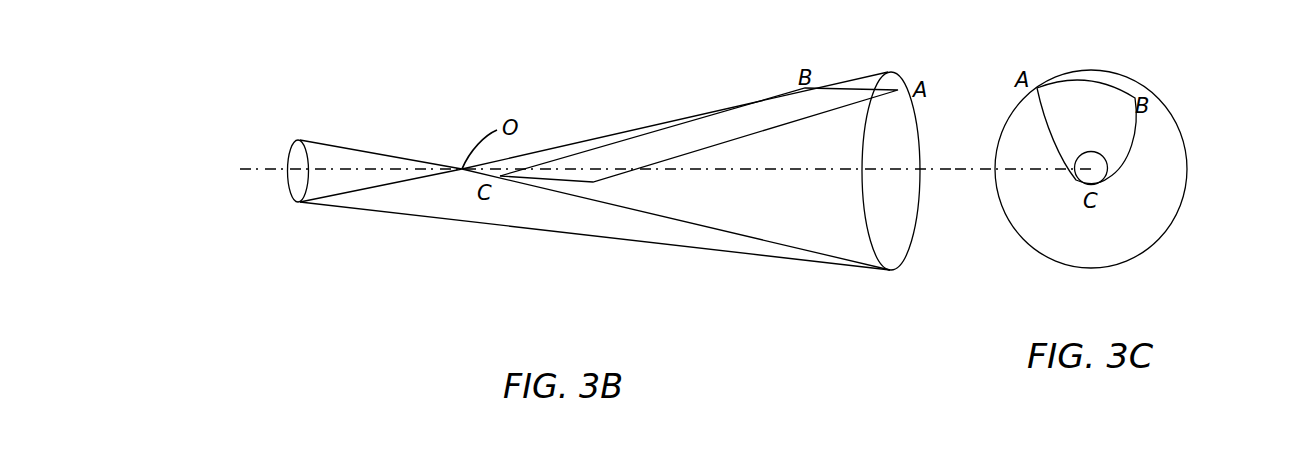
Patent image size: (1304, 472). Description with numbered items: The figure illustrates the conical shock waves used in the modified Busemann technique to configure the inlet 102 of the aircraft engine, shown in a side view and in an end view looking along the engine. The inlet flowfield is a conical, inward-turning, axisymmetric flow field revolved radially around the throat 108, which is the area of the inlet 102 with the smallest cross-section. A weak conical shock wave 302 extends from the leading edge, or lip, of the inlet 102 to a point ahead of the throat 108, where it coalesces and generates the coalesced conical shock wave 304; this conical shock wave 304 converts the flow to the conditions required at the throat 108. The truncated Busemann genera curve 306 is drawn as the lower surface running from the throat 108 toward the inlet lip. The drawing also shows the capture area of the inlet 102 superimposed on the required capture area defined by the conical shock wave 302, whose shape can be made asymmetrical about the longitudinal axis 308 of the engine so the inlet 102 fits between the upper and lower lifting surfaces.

In FIG. 3C, the inlet 102 is at (1095, 76).
In FIG. 3B, the throat 108 is at (290, 188).
In FIG. 3B, the conical shock wave 302 is at (733, 237).
In FIG. 3C, the conical shock wave 302 is at (1167, 105).
In FIG. 3B, the conical shock wave 304 is at (345, 150).
In FIG. 3C, the conical shock wave 304 is at (1110, 172).
In FIG. 3B, the truncated Busemann genera curve 306 is at (473, 225).
In FIG. 3B, the longitudinal axis 308 is at (277, 169).